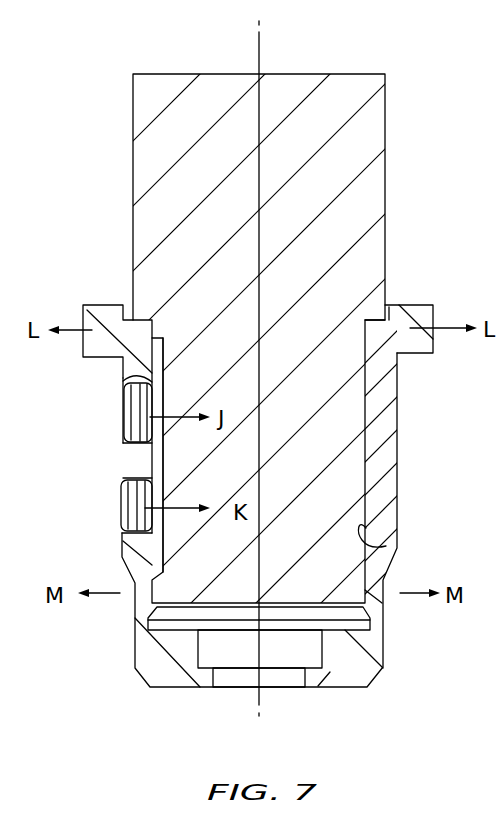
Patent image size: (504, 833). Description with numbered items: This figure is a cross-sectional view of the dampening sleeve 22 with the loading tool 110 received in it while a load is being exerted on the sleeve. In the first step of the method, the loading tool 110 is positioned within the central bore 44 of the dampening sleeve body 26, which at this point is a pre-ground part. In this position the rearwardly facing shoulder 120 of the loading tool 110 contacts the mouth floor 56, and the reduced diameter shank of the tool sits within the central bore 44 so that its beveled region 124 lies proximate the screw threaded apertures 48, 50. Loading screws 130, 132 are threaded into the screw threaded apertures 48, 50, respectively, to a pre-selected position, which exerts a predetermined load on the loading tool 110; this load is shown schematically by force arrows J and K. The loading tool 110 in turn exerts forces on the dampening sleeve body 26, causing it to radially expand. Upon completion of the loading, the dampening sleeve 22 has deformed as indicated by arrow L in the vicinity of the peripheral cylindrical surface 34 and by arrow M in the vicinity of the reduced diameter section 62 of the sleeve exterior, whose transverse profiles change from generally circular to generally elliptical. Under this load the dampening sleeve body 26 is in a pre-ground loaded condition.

The loading tool 110 is at (301, 71).
The dampening sleeve 22 is at (407, 479).
The peripheral cylindrical surface 34 is at (83, 347).
The mouth floor 56 is at (388, 317).
The rearwardly facing shoulder 120 is at (365, 322).
The screw threaded aperture 48 is at (124, 380).
The beveled region 124 is at (152, 455).
The loading screw 130 is at (128, 412).
The loading screw 132 is at (128, 499).
The screw threaded aperture 50 is at (118, 528).
The dampening sleeve body 26 is at (121, 560).
The central bore 44 is at (390, 546).
The reduced diameter section 62 is at (390, 583).